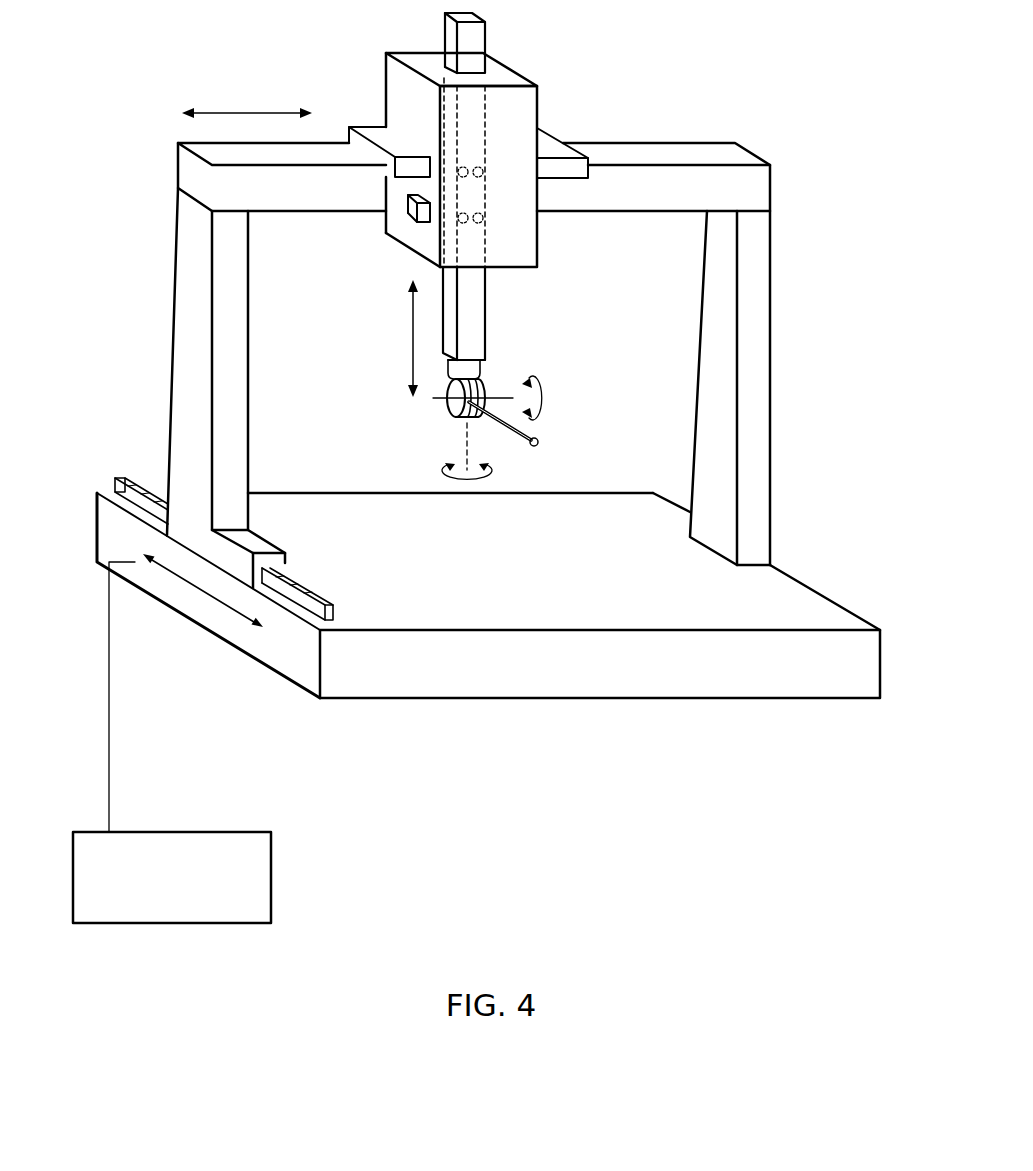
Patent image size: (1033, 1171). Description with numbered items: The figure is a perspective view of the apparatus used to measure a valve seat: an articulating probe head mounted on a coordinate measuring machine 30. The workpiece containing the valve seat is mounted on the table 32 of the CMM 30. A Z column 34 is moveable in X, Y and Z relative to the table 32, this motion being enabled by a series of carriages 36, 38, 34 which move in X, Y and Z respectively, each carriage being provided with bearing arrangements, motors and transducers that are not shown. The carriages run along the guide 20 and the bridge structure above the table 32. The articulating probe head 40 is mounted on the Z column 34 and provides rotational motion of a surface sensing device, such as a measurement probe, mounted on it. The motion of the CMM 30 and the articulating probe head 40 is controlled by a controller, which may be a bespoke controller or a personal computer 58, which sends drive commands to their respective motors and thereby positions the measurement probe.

The Y-axis guide rail / base 20 is at (113, 481).
The coordinate measuring machine 30 is at (692, 80).
The table 32 is at (480, 670).
The Z column 34 is at (477, 325).
The carriage 36 is at (723, 173).
The carriage 38 is at (527, 110).
The articulating probe head 40 is at (427, 424).
The personal computer 58 is at (207, 924).